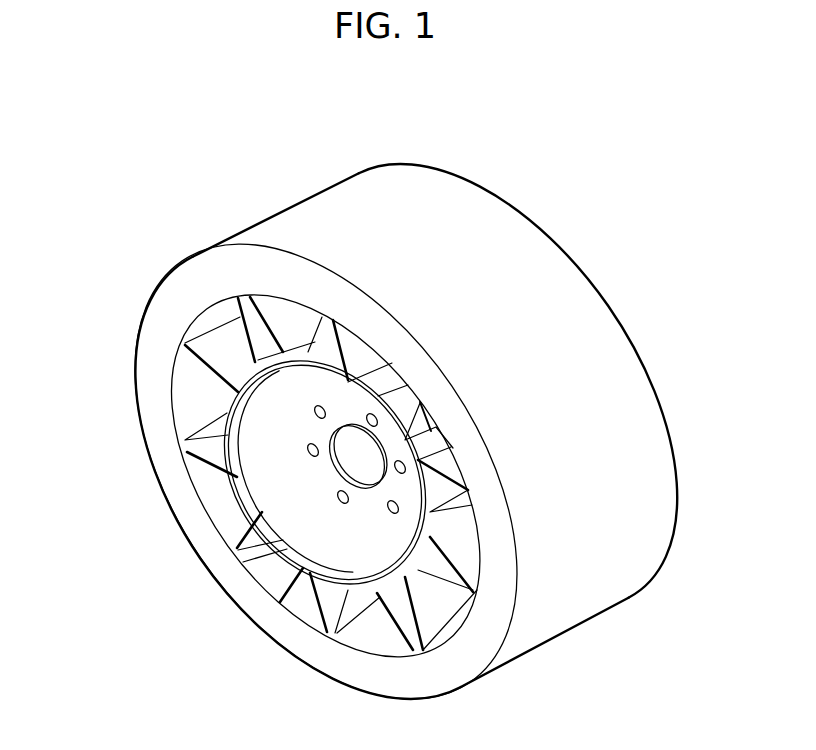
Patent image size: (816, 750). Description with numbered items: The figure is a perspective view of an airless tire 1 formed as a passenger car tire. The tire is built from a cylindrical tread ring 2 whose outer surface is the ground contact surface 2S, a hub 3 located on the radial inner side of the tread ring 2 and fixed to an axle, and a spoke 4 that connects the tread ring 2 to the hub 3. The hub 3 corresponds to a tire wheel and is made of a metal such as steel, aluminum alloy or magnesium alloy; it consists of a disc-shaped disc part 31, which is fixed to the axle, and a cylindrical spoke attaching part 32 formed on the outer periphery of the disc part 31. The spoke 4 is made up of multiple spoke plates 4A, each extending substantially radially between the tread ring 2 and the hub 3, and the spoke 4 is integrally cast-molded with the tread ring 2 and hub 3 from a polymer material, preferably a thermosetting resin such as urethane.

The airless tire 1 is at (505, 178).
The tread ring 2 is at (627, 403).
The ground contact surface 2S is at (577, 578).
The hub 3 is at (72, 318).
The disc part 31 is at (283, 407).
The spoke attaching part 32 is at (263, 488).
The spoke 4 is at (283, 320).
The spoke plate 4A is at (329, 473).